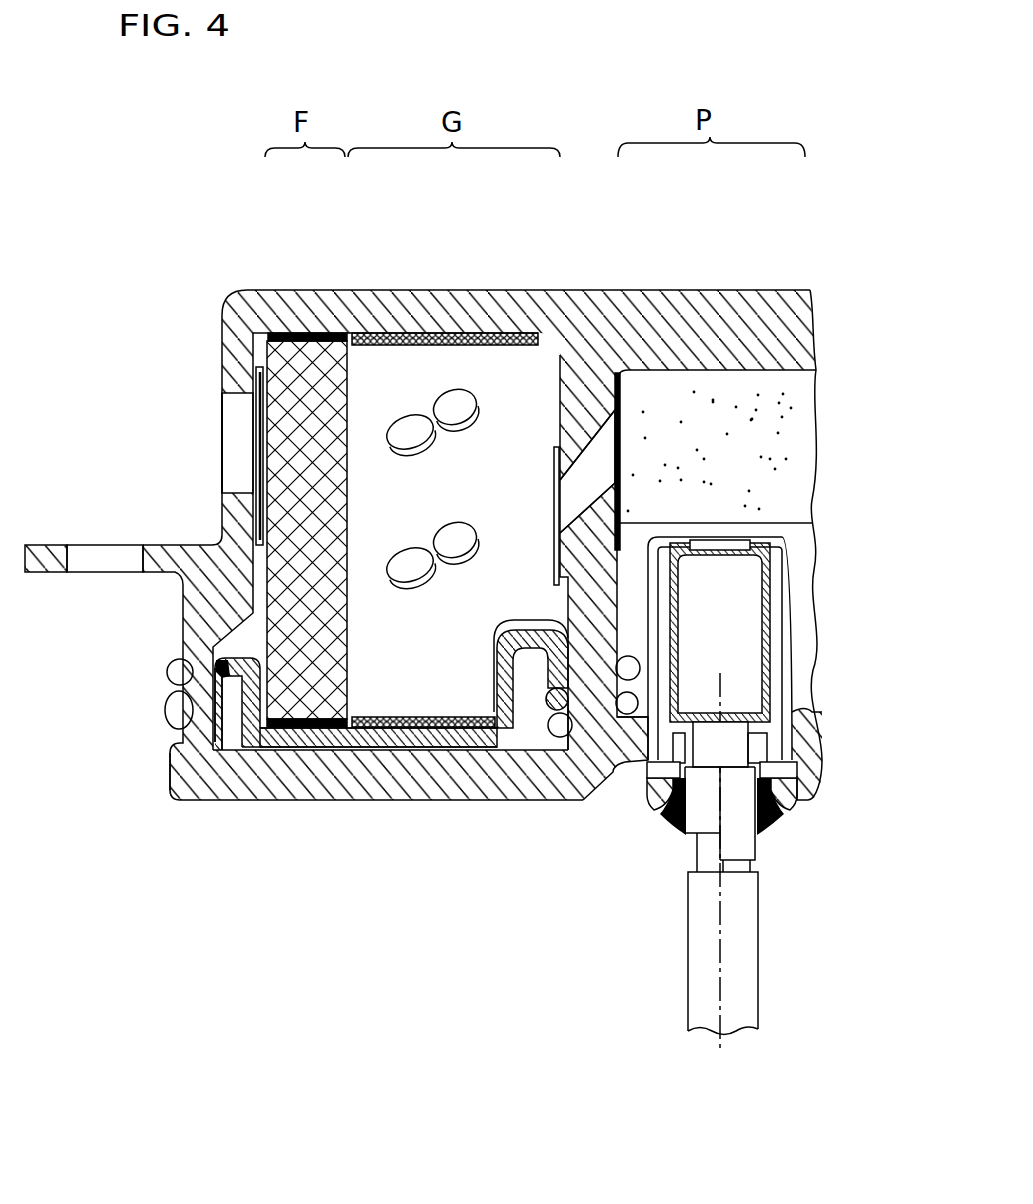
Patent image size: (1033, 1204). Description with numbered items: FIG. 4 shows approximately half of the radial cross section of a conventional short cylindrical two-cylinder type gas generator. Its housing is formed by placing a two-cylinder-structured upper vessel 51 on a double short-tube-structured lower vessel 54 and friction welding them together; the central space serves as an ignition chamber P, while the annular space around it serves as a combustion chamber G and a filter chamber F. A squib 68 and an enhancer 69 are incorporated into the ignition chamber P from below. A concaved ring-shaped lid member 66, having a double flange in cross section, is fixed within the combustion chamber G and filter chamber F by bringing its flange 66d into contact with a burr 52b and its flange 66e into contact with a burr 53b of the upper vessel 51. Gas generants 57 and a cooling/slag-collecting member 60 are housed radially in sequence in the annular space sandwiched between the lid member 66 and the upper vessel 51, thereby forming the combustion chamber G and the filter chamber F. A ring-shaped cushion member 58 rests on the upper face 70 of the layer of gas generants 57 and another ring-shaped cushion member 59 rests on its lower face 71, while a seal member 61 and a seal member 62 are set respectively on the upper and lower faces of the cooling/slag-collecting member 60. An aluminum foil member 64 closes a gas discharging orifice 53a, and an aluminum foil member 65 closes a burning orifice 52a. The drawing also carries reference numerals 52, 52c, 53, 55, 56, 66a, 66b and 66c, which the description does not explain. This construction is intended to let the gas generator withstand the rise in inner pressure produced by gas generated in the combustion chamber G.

The upper vessel 51 is at (218, 303).
The housing body 52 is at (640, 370).
The burning orifice 52a is at (626, 453).
The burr 52b is at (627, 680).
The oblique passage 52c is at (557, 570).
The cylindrical wall portion 53 is at (255, 362).
The gas discharging orifice 53a is at (216, 438).
The burr 53b is at (167, 688).
The lower vessel 54 is at (162, 798).
The groove 55 is at (556, 712).
The outer wall 56 is at (193, 738).
The gas generants 57 is at (440, 398).
The cushion member 58 is at (468, 330).
The cushion member 59 is at (362, 748).
The cooling/slag-collecting member 60 is at (318, 352).
The seal member 61 is at (276, 330).
The seal member 62 is at (275, 745).
The aluminum foil member 64 is at (255, 405).
The aluminum foil member 65 is at (555, 470).
The lid member 66 is at (326, 752).
The seal lip 66a is at (527, 692).
The seal pocket portion 66b is at (228, 745).
The seal bottom portion 66c is at (427, 750).
The flange 66d is at (545, 622).
The flange 66e is at (188, 623).
The squib 68 is at (750, 600).
The enhancer 69 is at (780, 425).
The upper face 70 is at (376, 322).
The lower face 71 is at (390, 783).